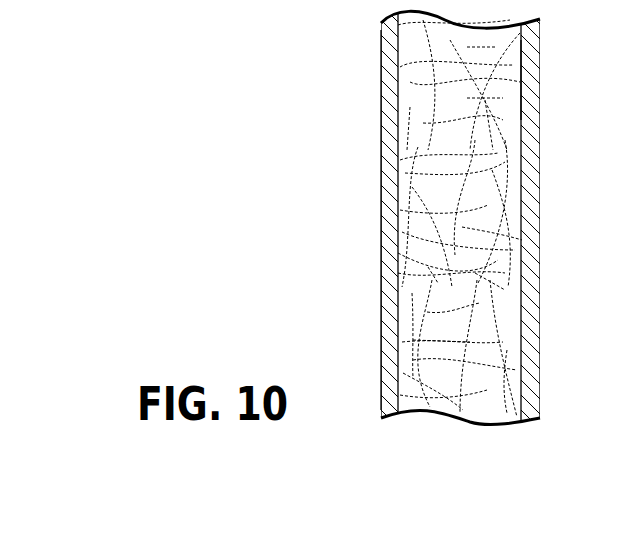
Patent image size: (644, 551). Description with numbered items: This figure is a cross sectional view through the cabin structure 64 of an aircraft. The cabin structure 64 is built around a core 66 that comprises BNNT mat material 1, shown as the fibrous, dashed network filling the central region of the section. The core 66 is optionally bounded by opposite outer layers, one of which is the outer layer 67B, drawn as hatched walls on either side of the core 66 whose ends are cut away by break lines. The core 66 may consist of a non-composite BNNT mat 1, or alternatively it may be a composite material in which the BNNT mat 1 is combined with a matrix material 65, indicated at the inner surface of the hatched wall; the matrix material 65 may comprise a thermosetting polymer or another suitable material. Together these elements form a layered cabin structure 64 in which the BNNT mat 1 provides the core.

The BNNT mat material 1 is at (493, 336).
The cabin structure 64 is at (452, 220).
The matrix material 65 is at (528, 112).
The core 66 is at (480, 312).
The outer layer 67B is at (540, 163).